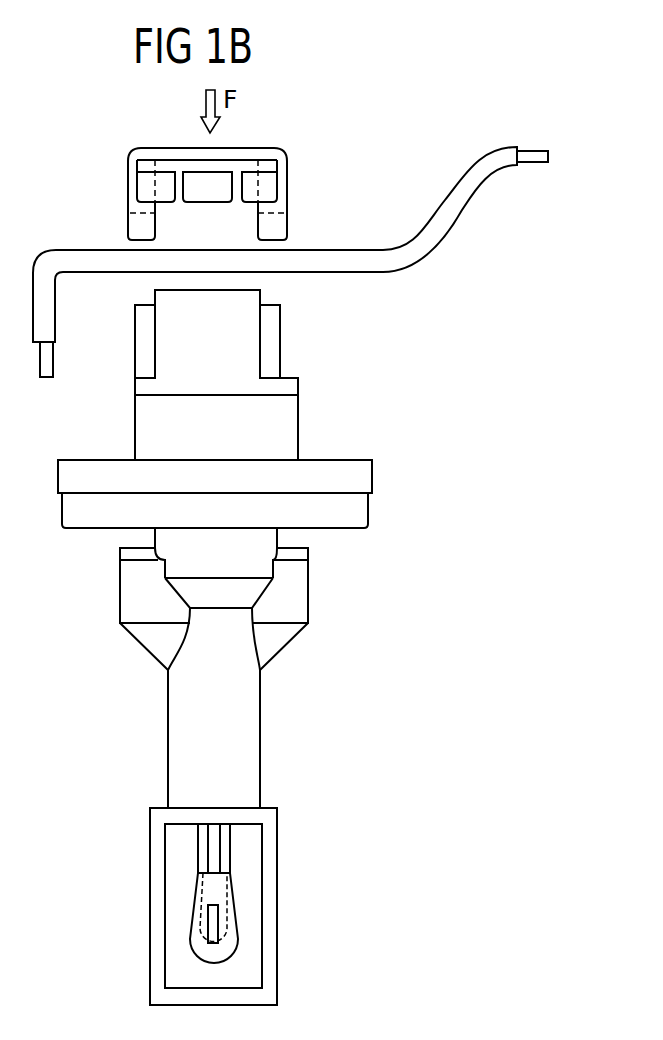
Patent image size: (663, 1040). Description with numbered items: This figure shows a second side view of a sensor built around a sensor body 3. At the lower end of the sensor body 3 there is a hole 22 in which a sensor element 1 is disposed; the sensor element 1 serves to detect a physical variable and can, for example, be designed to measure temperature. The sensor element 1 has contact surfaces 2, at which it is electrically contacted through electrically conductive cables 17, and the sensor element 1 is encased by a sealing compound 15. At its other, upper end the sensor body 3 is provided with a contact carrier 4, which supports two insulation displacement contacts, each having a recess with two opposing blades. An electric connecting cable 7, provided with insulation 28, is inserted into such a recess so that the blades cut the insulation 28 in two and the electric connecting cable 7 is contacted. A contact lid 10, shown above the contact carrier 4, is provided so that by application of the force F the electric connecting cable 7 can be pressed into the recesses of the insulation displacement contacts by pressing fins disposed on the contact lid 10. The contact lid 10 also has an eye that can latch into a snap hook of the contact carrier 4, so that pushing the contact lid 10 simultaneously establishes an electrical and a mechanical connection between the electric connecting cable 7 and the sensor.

The sensor element 1 is at (218, 927).
The contact surfaces 2 is at (202, 917).
The sensor body 3 is at (258, 565).
The contact carrier 4 is at (243, 328).
The electric connecting cable 7 is at (530, 148).
The contact lid 10 is at (130, 152).
The sealing compound 15 is at (202, 950).
The electrically conductive cables 17 is at (202, 842).
The hole 22 is at (252, 957).
The insulation 28 is at (497, 164).